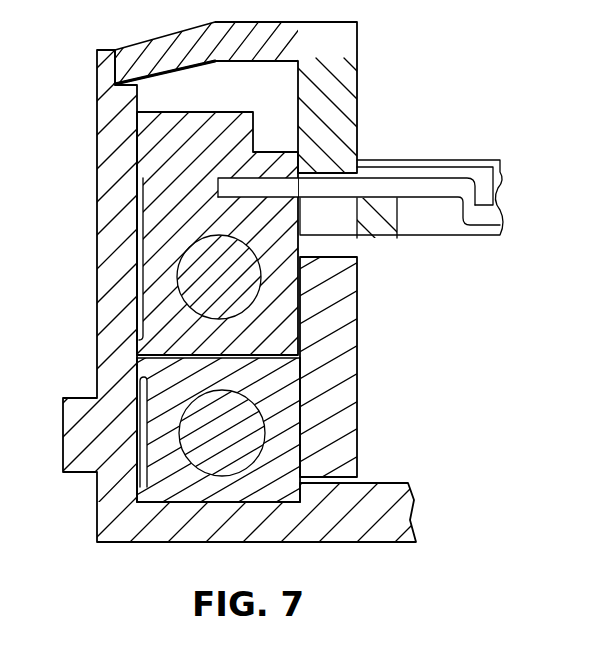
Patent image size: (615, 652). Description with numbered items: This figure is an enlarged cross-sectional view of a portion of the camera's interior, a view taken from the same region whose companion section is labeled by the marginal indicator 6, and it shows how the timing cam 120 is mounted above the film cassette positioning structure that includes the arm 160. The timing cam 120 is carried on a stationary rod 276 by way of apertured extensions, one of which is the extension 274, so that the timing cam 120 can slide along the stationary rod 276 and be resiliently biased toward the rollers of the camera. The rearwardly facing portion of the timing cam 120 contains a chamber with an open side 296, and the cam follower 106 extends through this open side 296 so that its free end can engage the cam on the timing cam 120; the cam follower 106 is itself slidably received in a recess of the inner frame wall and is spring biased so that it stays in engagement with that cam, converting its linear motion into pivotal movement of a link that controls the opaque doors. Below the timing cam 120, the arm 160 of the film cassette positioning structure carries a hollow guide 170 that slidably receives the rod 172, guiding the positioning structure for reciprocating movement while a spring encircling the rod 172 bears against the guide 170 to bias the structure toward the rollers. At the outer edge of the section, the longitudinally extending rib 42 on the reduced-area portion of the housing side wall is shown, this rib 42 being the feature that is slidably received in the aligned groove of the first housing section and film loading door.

The housing 6 is at (180, 159).
The longitudinally extending rib 42 is at (92, 418).
The cam follower 106 is at (437, 190).
The timing cam 120 is at (173, 234).
The first arm 160 is at (338, 407).
The hollow guide 170 is at (165, 436).
The rod 172 is at (197, 412).
The extension 274 is at (276, 347).
The stationary rod 276 is at (190, 282).
The open side 296 is at (346, 177).